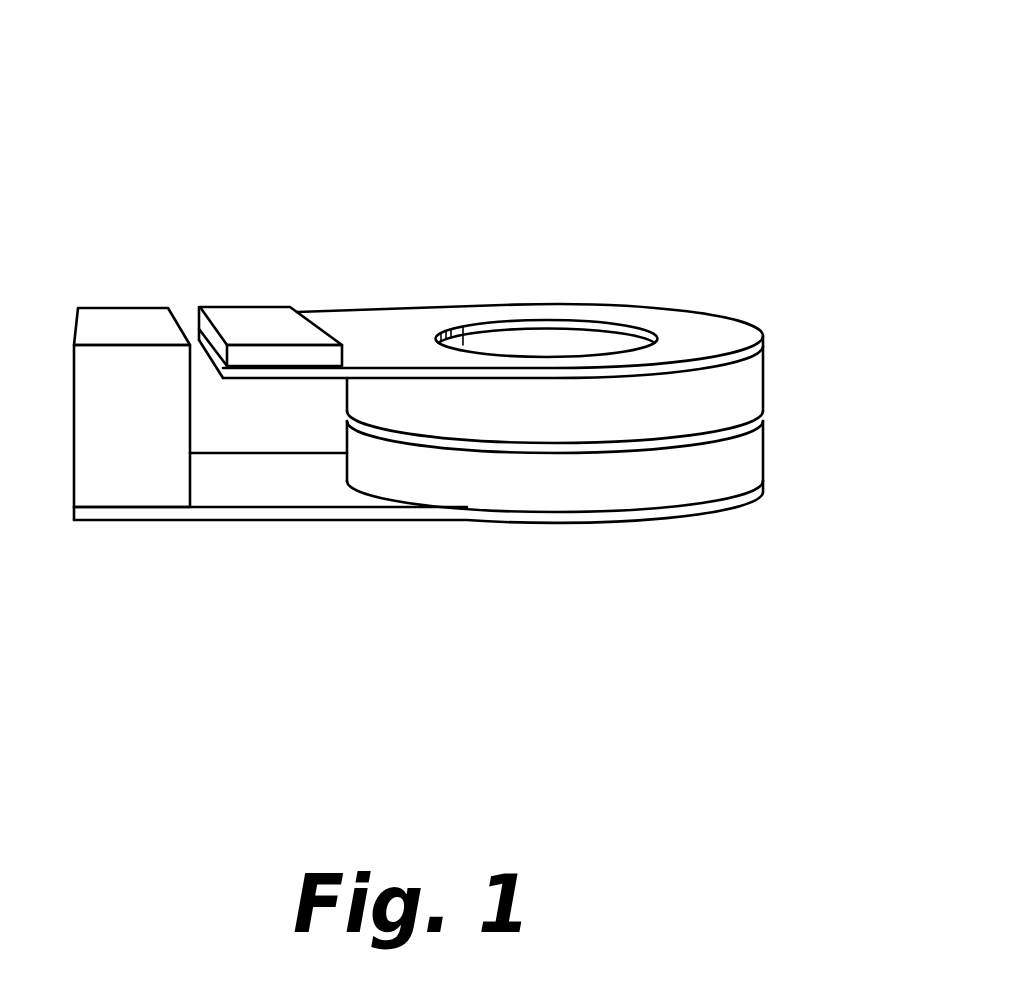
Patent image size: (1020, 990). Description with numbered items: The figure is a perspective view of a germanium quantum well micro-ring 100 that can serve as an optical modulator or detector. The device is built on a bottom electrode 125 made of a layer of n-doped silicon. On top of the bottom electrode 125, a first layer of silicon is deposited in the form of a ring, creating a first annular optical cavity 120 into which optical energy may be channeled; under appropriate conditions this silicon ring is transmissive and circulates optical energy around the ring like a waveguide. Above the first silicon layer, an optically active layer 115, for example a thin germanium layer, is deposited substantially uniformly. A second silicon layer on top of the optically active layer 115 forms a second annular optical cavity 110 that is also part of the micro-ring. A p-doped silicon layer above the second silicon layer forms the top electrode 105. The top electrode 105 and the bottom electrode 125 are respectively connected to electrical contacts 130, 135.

The quantum well micro-ring 100 is at (602, 113).
The top electrode 105 is at (716, 322).
The second annular optical cavity 110 is at (755, 392).
The optically active layer 115 is at (757, 418).
The first annular optical cavity 120 is at (750, 455).
The bottom electrode 125 is at (735, 502).
The electrical contact 130 is at (253, 313).
The electrical contact 135 is at (123, 332).